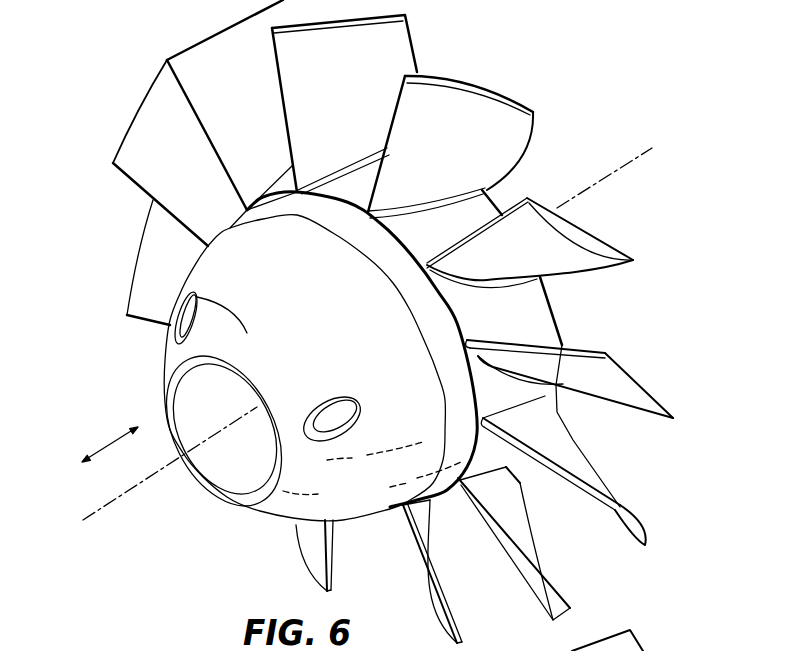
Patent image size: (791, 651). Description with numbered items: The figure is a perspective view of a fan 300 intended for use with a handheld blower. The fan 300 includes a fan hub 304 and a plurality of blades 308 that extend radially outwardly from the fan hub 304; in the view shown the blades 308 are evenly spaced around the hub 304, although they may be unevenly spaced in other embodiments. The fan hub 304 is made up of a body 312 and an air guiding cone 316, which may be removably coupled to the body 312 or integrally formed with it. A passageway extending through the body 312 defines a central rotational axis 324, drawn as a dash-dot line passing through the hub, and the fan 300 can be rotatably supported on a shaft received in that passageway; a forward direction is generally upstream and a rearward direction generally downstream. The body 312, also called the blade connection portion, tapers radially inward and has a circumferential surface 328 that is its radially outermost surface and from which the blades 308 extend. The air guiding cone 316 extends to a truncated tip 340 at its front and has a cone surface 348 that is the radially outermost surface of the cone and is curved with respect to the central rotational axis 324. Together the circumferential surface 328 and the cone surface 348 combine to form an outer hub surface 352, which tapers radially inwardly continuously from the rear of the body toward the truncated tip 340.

The fan 300 is at (108, 89).
The fan hub 304 is at (232, 248).
The blades 308 is at (363, 45).
The body 312 is at (530, 315).
The air guiding cone 316 is at (335, 481).
The central rotational axis 324 is at (617, 175).
The circumferential surface 328 is at (463, 224).
The truncated tip 340 is at (200, 477).
The cone surface 348 is at (183, 294).
The outer hub surface 352 is at (477, 388).